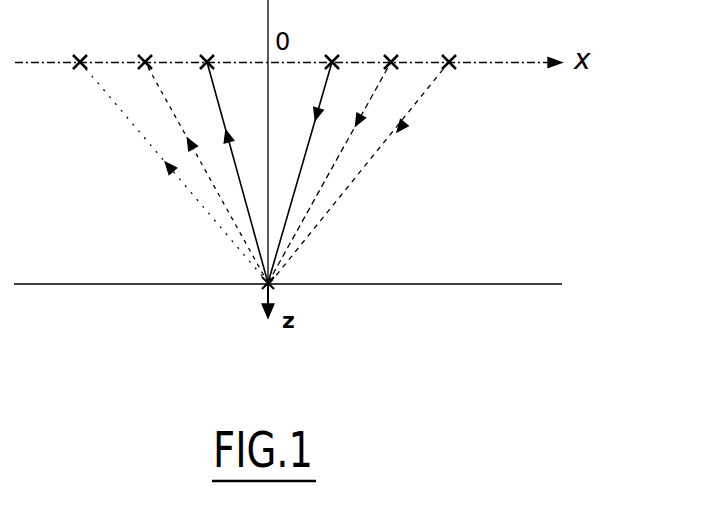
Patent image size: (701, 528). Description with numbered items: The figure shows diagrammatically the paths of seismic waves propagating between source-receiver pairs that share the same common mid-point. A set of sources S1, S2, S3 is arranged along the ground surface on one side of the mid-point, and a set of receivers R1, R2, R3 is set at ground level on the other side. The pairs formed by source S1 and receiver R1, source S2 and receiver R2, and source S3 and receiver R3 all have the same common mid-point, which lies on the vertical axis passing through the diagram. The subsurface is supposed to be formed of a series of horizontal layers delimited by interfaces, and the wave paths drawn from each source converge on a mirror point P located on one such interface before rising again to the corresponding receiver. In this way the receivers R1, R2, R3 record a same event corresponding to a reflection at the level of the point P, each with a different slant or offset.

The receiver R1 is at (229, 153).
The receiver R2 is at (197, 153).
The receiver R3 is at (165, 153).
The source S1 is at (309, 153).
The source S2 is at (341, 153).
The source S3 is at (372, 153).
The mirror point P is at (254, 297).